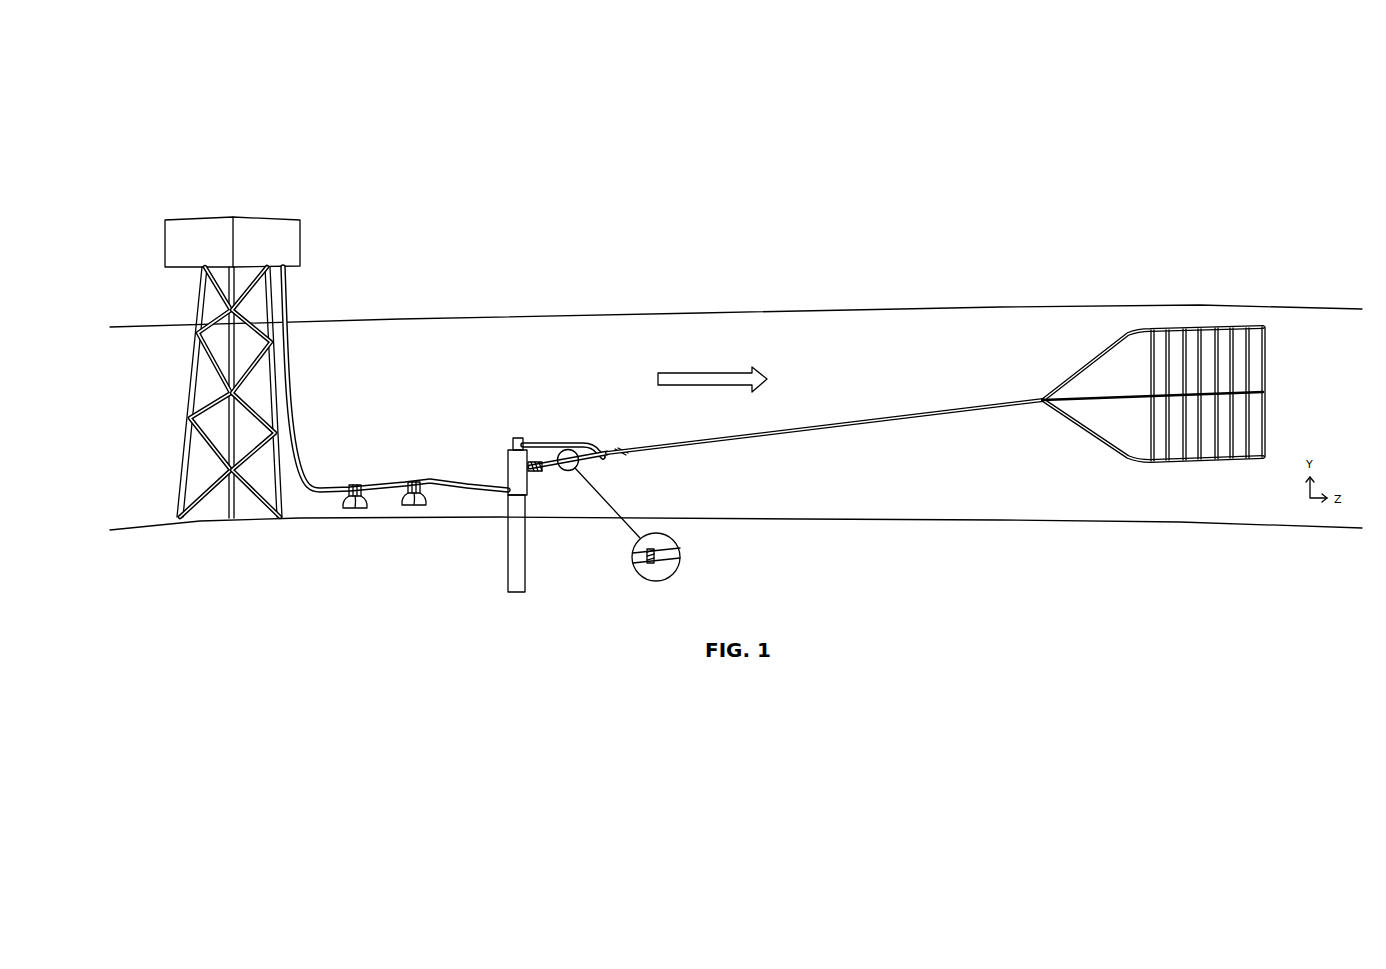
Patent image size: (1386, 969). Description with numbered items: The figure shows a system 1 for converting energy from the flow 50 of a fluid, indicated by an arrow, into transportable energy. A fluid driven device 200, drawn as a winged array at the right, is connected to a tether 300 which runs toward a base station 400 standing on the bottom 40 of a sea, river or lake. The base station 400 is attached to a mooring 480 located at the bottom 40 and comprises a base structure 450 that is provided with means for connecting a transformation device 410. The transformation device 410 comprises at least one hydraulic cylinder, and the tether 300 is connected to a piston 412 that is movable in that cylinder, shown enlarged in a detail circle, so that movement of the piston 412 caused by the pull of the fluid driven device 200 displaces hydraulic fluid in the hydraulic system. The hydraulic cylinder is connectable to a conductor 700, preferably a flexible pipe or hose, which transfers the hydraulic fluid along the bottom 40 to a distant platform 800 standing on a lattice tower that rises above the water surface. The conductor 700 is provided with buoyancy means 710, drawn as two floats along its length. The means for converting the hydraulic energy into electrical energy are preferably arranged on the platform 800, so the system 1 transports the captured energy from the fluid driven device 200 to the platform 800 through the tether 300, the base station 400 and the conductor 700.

The system 1 is at (143, 150).
The bottom 40 is at (927, 520).
The flow 50 is at (688, 373).
The fluid driven device 200 is at (1052, 377).
The tether 300 is at (748, 440).
The base station 400 is at (530, 514).
The transformation device 410 is at (597, 463).
The piston 412 is at (637, 571).
The base structure 450 is at (533, 484).
The mooring 480 is at (527, 565).
The conductor 700 is at (467, 484).
The buoyancy means 710 is at (410, 483).
The platform 800 is at (302, 235).